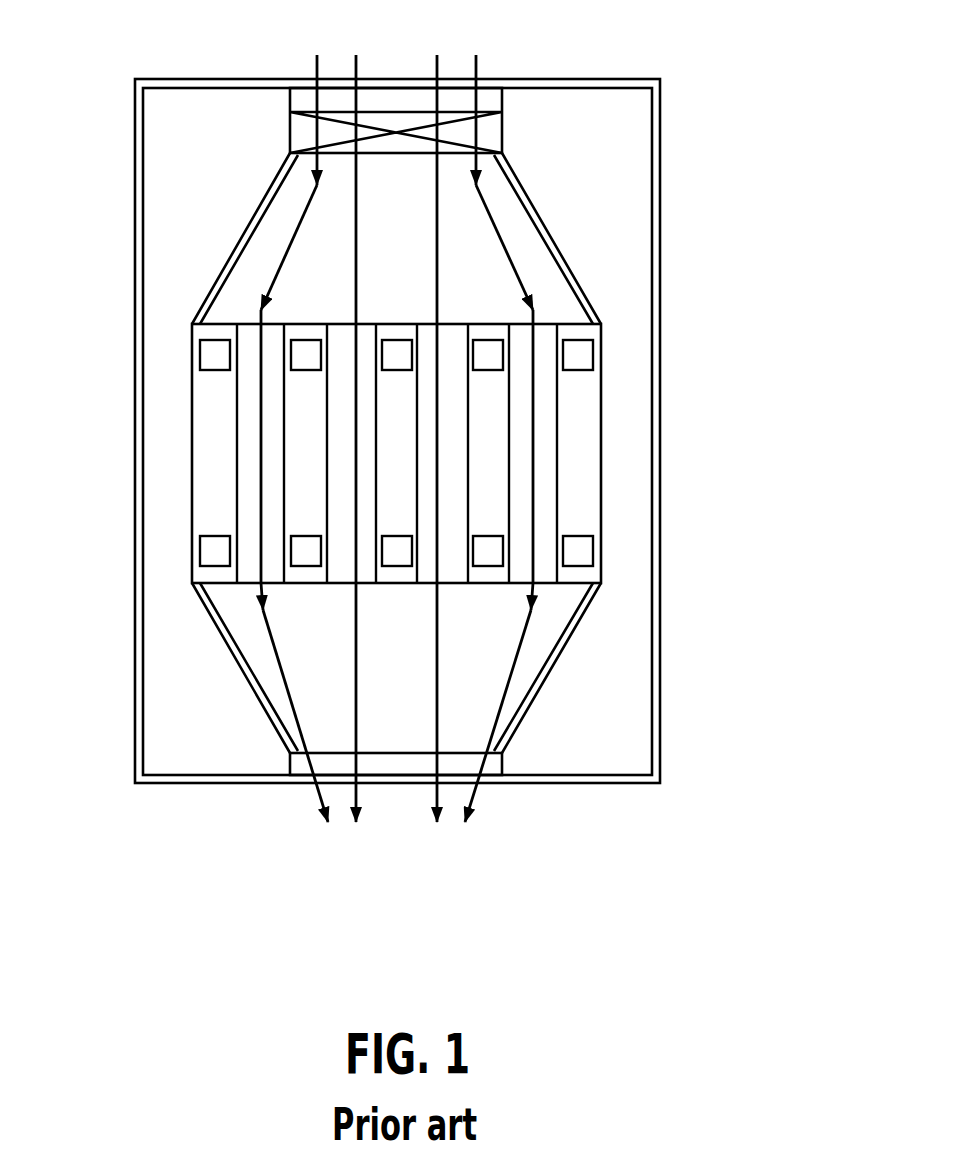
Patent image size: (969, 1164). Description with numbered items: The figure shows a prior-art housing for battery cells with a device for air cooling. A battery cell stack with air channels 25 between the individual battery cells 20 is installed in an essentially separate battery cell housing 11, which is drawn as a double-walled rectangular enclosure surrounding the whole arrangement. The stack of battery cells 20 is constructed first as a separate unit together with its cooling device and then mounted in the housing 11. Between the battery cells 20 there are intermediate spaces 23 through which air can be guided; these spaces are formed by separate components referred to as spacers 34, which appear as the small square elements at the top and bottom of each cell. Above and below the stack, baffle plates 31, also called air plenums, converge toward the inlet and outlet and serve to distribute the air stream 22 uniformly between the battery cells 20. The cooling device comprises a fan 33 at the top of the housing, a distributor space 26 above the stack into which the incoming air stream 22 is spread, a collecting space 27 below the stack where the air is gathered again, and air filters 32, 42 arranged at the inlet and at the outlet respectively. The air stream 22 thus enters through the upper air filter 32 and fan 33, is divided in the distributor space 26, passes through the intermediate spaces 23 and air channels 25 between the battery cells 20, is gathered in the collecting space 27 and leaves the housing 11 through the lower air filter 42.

The battery cell housing 11 is at (661, 723).
The battery cells 20 is at (580, 418).
The air stream 22 is at (311, 63).
The intermediate spaces 23 is at (336, 432).
The air channels 25 is at (246, 502).
The distributor space 26 is at (276, 246).
The collecting space 27 is at (296, 630).
The baffle plates 31 is at (557, 248).
The air filter 32 is at (503, 100).
The fan 33 is at (503, 130).
The spacers 34 is at (548, 470).
The air filter 42 is at (504, 765).